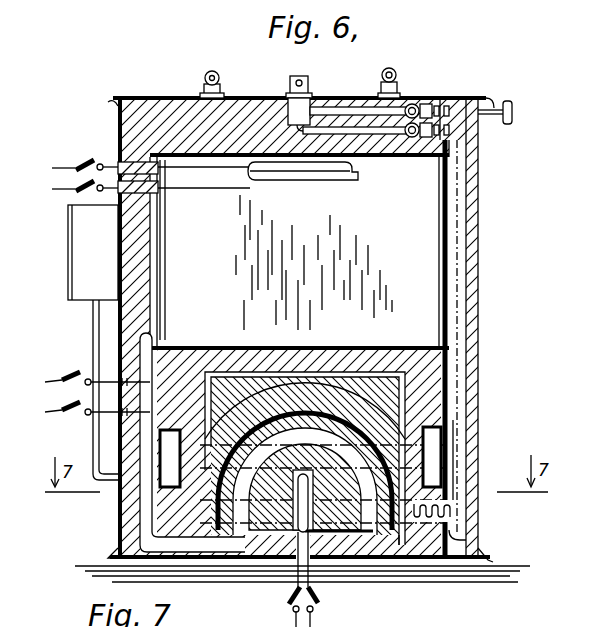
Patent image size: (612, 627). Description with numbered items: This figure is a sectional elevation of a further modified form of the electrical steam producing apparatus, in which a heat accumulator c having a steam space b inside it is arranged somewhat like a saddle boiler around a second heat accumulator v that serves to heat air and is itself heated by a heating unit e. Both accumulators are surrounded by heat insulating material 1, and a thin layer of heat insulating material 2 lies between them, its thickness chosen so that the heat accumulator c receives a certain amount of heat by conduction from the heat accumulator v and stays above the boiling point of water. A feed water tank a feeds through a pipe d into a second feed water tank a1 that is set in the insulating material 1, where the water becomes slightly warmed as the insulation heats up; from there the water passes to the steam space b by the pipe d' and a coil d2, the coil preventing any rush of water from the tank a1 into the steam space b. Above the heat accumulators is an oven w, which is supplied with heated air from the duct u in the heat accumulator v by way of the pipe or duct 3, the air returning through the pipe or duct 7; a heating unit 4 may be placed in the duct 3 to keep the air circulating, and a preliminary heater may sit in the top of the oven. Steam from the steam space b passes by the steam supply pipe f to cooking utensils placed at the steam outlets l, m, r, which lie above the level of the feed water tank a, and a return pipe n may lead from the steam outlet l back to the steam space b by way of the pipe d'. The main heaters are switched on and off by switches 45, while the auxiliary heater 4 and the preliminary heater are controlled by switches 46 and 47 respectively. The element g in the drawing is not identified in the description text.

The return pipe n is at (220, 347).
The pipe or duct 3 is at (128, 516).
The heat insulating material 1 is at (190, 378).
The duct u is at (287, 440).
The steam supply pipe f is at (347, 393).
The heat accumulator c is at (393, 419).
The thin layer of heat insulating material 2 is at (352, 421).
The heat accumulator v is at (311, 487).
The heating unit e is at (312, 498).
The switches 45 is at (287, 595).
The steam space b is at (213, 478).
The second feed water tank a1 is at (432, 458).
The coil d2 is at (442, 513).
The pipe or duct 7 is at (466, 389).
The pipe d' is at (268, 442).
The pipe d is at (71, 390).
The feed water tank a is at (93, 252).
The switch 46 is at (80, 377).
The heating unit 4 is at (106, 427).
The switch 47 is at (85, 164).
The heating element g is at (287, 182).
The oven w is at (323, 262).
The steam outlet m is at (222, 78).
The steam outlet l is at (312, 83).
The steam outlet r is at (398, 74).